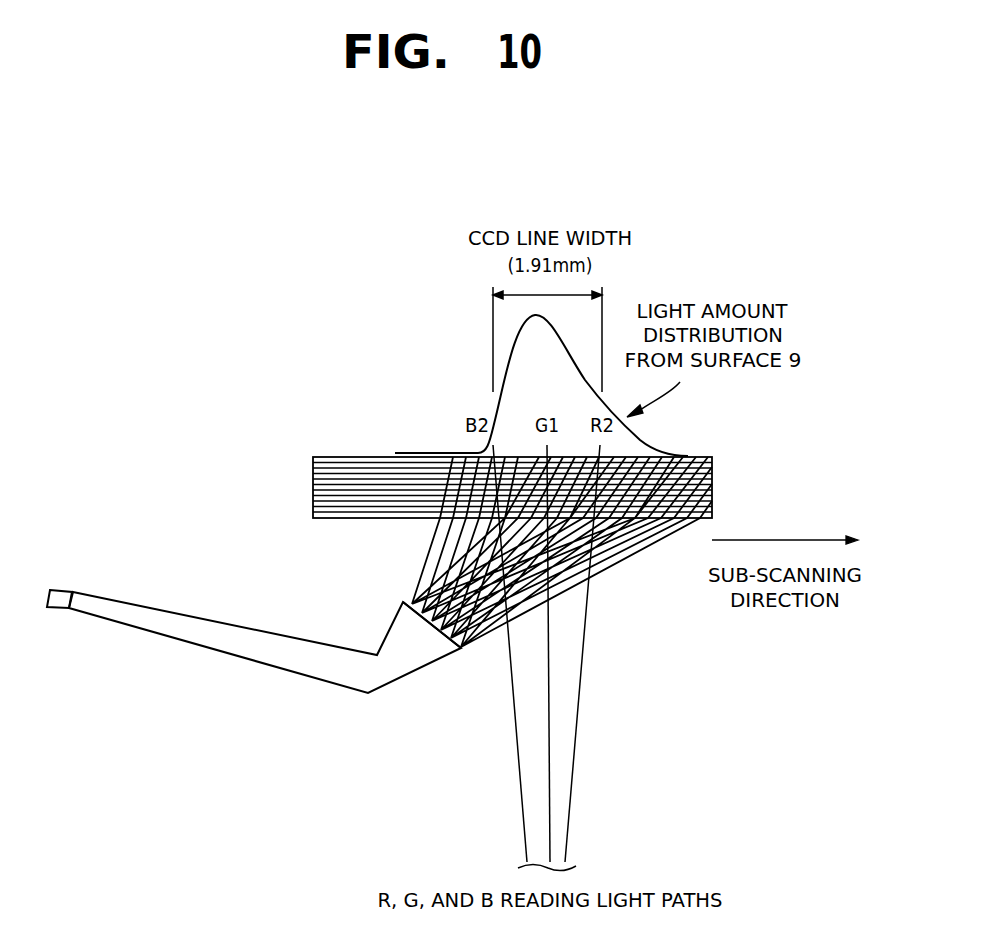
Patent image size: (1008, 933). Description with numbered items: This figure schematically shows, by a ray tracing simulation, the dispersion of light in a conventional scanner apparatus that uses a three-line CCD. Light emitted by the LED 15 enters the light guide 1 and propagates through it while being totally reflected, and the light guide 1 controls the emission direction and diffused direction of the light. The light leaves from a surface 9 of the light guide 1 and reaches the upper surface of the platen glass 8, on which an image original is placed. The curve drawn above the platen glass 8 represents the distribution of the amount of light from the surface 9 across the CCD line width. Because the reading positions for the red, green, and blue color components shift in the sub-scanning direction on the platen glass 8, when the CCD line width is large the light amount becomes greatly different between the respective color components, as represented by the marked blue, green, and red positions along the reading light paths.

The light guide 1 is at (225, 645).
The platen glass 8 is at (324, 487).
The surface 9 is at (406, 594).
The LED 15 is at (62, 598).